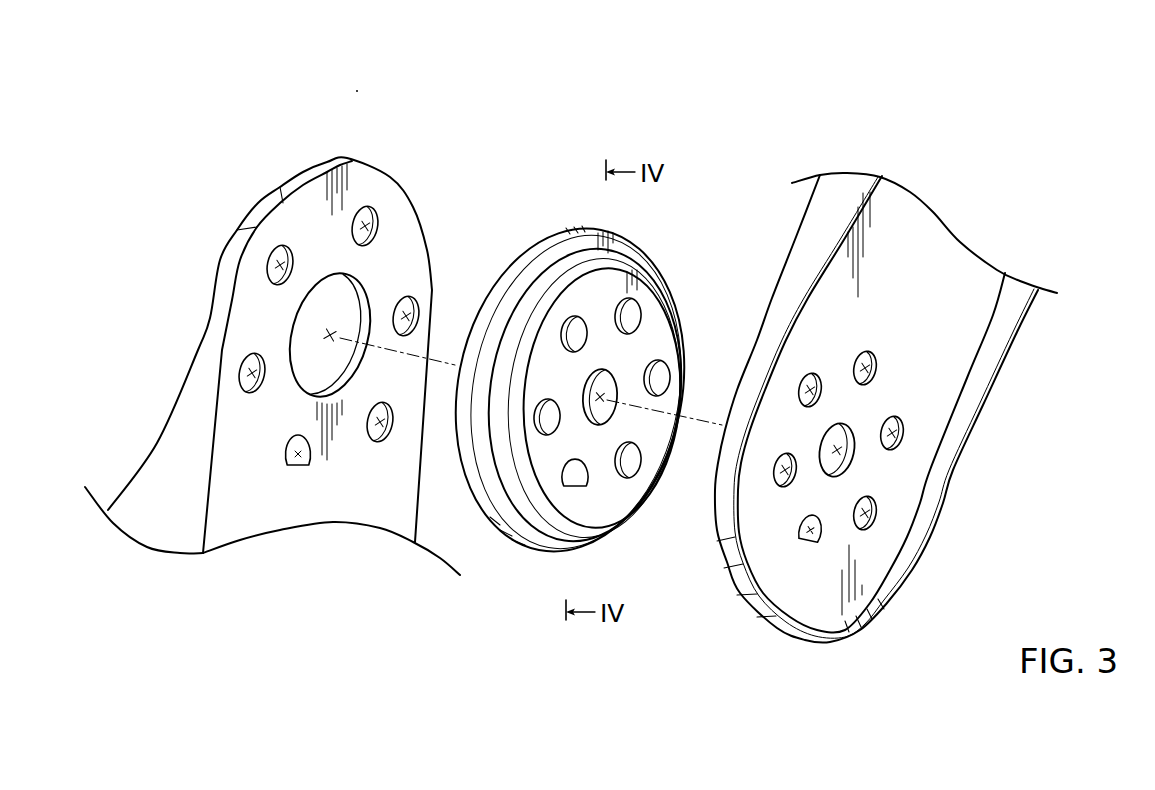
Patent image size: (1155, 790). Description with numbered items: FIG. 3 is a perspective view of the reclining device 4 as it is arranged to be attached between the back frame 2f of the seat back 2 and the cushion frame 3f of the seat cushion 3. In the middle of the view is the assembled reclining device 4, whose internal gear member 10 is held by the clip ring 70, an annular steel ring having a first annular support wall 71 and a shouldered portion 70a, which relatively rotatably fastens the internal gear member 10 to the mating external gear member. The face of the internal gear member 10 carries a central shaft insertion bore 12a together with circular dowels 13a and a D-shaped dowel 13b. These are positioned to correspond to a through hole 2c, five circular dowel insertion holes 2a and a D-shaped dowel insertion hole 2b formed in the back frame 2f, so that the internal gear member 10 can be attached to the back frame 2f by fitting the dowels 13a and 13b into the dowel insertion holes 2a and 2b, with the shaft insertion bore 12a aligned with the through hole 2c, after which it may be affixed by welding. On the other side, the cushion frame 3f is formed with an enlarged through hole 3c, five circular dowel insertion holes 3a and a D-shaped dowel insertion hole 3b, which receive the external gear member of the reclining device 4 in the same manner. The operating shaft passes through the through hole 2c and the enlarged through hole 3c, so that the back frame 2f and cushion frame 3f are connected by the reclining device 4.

The seat back 2 is at (903, 408).
The circular dowel insertion holes 2a is at (810, 375).
The D-shaped dowel insertion hole 2b is at (808, 545).
The through hole 2c is at (837, 450).
The back frame 2f is at (954, 367).
The seat cushion 3 is at (272, 366).
The circular dowel insertion holes 3a is at (372, 231).
The D-shaped dowel insertion hole 3b is at (290, 470).
The enlarged through hole 3c is at (333, 335).
The cushion frame 3f is at (160, 450).
The reclining device 4 is at (589, 373).
The internal gear member 10 is at (665, 292).
The shaft insertion bore 12a is at (600, 397).
The dowels 13a is at (567, 330).
The dowel 13b is at (577, 490).
The clip ring 70 is at (570, 371).
The shouldered portion 70a is at (578, 238).
The first annular support wall 71 is at (558, 280).